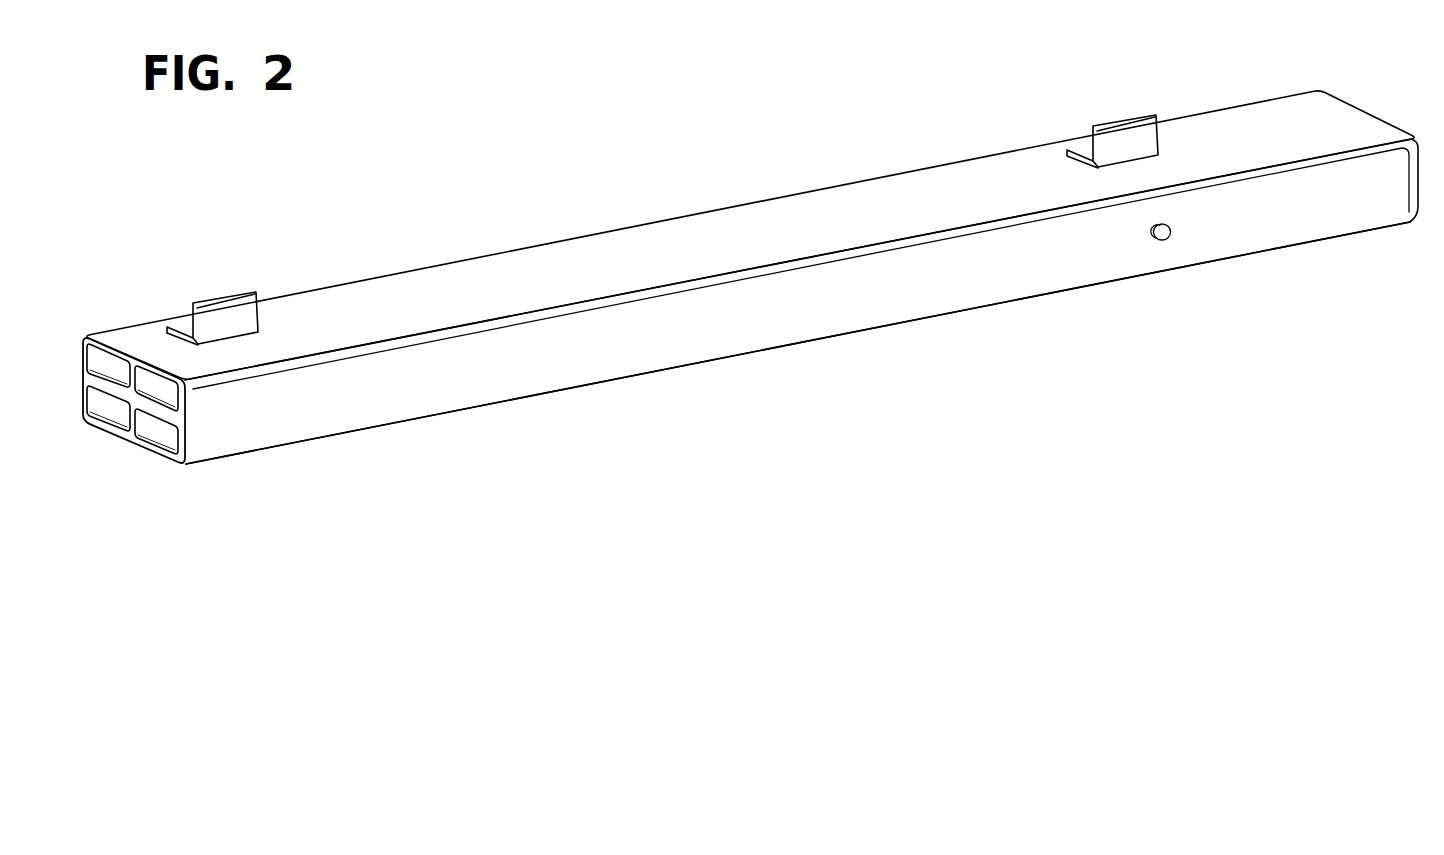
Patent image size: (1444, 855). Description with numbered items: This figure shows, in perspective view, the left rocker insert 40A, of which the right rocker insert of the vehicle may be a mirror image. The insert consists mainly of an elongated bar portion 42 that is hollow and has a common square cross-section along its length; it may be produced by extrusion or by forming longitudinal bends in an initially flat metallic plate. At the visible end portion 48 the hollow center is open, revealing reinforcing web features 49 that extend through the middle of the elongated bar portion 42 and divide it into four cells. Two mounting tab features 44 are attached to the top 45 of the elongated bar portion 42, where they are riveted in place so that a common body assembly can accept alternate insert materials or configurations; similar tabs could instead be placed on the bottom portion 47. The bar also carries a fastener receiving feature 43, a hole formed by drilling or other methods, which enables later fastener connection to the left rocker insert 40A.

The left rocker insert 40A is at (750, 313).
The elongated bar portion 42 is at (595, 345).
The fastener receiving feature 43 is at (1172, 230).
The mounting tab feature 44 is at (229, 313).
The top 45 is at (767, 229).
The bottom portion 47 is at (878, 330).
The end portion 48 is at (158, 467).
The reinforcing web feature 49 is at (138, 422).